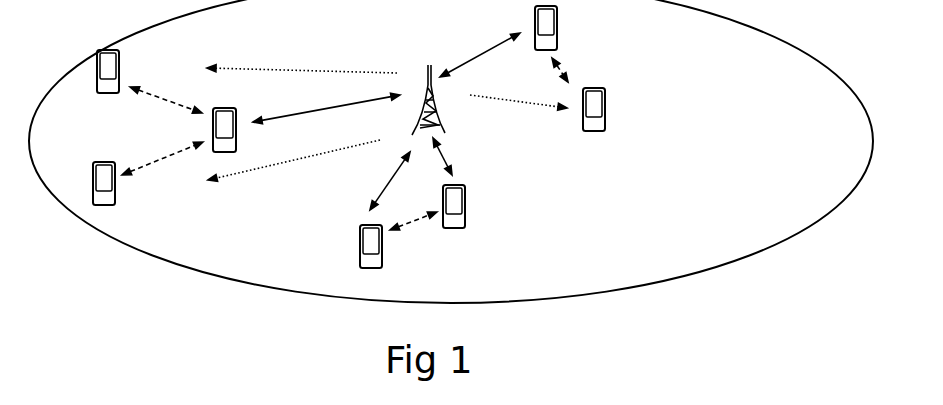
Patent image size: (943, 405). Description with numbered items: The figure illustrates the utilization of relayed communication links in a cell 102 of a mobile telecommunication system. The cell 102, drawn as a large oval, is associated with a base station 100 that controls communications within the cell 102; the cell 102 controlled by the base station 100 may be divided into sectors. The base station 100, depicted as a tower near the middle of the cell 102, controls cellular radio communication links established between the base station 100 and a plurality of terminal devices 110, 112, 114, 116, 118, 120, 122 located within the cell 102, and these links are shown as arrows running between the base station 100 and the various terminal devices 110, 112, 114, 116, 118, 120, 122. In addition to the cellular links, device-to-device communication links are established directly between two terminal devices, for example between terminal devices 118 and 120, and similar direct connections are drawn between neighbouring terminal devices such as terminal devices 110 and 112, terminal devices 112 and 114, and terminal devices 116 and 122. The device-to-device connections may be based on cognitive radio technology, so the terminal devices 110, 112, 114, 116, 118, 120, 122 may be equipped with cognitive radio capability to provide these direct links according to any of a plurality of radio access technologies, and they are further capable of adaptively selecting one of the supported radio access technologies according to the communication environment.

The base station 100 is at (441, 126).
The cell 102 is at (348, 21).
The terminal device 110 is at (119, 52).
The terminal device 112 is at (236, 138).
The terminal device 114 is at (115, 192).
The terminal device 116 is at (465, 215).
The terminal device 118 is at (605, 118).
The terminal device 120 is at (557, 38).
The terminal device 122 is at (382, 256).